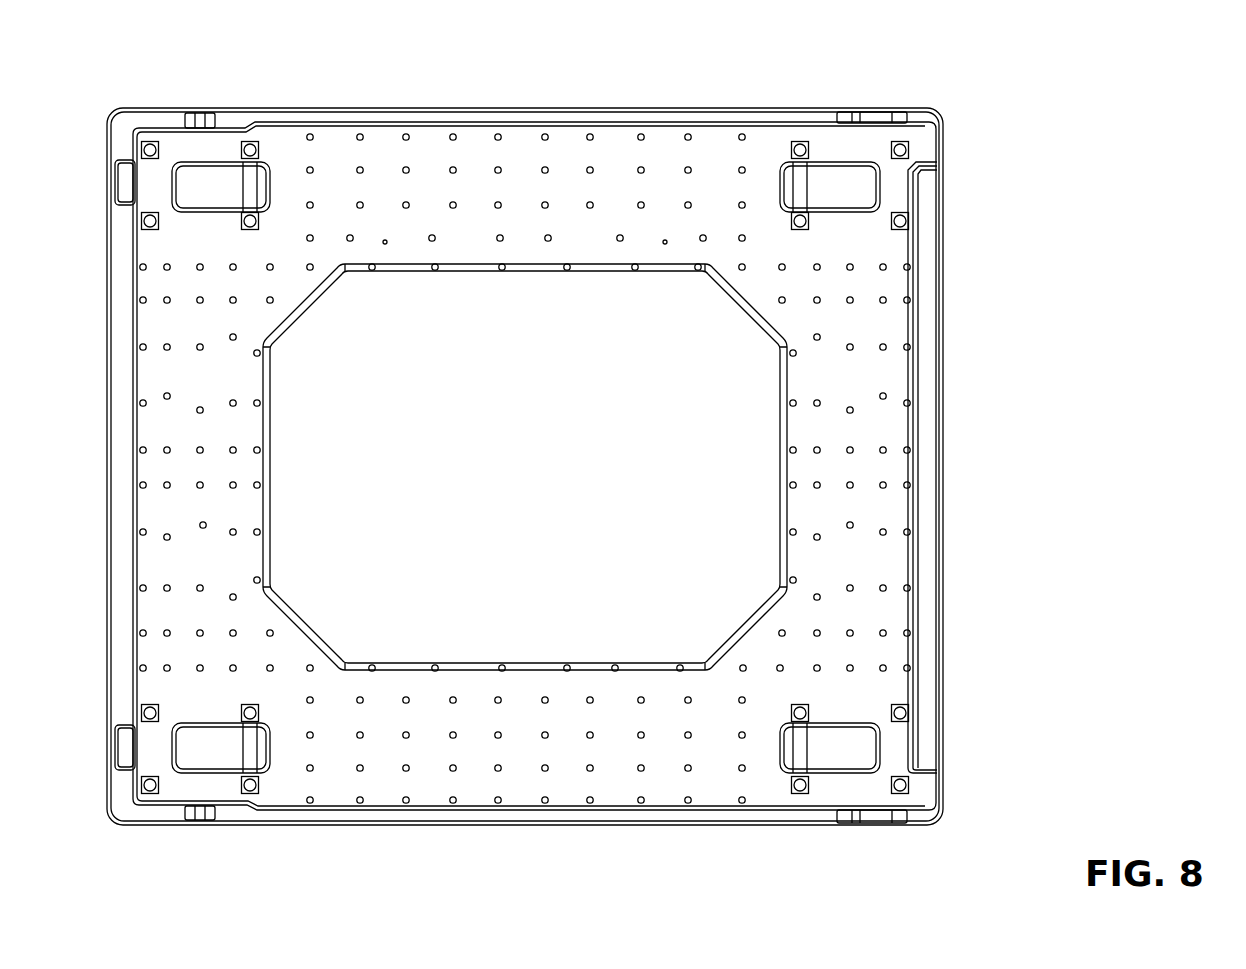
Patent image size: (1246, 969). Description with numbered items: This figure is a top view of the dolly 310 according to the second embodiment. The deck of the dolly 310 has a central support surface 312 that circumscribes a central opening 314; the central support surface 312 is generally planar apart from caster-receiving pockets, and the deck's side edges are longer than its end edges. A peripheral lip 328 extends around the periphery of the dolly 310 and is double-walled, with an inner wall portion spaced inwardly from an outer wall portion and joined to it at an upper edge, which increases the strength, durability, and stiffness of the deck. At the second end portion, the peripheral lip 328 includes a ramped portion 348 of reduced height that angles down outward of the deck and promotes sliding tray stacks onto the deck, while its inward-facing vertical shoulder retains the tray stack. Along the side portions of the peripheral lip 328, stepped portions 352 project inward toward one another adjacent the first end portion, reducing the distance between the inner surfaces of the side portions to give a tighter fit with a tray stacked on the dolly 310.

The dolly 310 is at (980, 95).
The central support surface 312 is at (620, 190).
The central opening 314 is at (498, 272).
The peripheral lip 328 is at (346, 109).
The ramped portion 348 is at (928, 276).
The stepped portions 352 is at (236, 170).